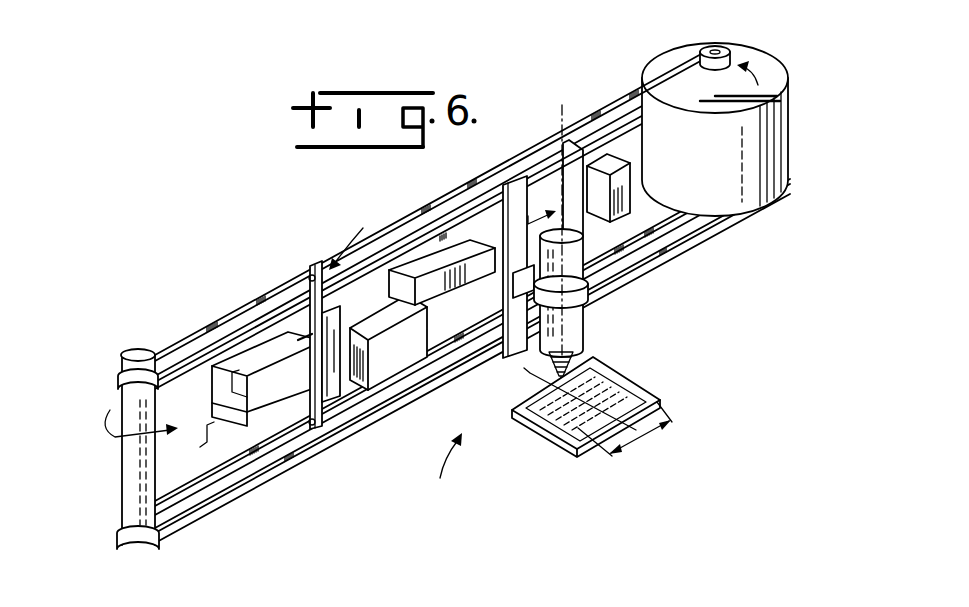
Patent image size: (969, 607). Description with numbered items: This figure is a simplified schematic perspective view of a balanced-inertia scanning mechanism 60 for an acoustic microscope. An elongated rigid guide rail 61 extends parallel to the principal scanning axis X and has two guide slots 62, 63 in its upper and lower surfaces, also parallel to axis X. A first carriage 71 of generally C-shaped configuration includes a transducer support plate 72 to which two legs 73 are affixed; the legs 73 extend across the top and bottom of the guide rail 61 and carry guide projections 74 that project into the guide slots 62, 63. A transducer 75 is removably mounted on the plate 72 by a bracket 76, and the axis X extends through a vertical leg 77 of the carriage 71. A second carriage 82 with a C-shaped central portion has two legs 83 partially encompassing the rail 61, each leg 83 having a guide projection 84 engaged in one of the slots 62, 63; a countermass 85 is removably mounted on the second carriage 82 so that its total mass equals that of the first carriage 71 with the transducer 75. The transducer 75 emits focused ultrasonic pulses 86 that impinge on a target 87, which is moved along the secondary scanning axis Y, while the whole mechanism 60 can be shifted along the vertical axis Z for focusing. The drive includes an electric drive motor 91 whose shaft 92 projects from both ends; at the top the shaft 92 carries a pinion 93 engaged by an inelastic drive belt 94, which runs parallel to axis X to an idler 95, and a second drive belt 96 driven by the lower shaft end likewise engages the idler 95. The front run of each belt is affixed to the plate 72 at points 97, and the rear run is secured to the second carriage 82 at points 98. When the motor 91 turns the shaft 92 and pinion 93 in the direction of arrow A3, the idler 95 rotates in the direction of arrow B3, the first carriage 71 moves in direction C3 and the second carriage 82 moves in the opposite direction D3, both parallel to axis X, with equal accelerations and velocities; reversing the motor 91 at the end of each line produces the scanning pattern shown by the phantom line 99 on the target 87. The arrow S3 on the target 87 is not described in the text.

The balanced-inertia scanning mechanism 60 is at (428, 469).
The guide rail 61 is at (617, 200).
The guide slot 62 is at (213, 385).
The guide slot 63 is at (235, 422).
The first carriage 71 is at (543, 148).
The transducer support plate 72 is at (533, 173).
The carriage legs 73 is at (475, 230).
The guide projections 74 is at (445, 235).
The transducer 75 is at (578, 330).
The bracket 76 is at (590, 297).
The vertical leg 77 is at (497, 267).
The second carriage 82 is at (313, 257).
The carriage legs 83 is at (318, 343).
The guide projection 84 is at (310, 337).
The countermass 85 is at (402, 358).
The focused ultrasonic pulses 86 is at (580, 350).
The target 87 is at (567, 440).
The electric drive motor 91 is at (788, 138).
The shaft 92 is at (722, 50).
The pinion 93 is at (709, 48).
The drive belt 94 is at (678, 67).
The idler 95 is at (130, 484).
The second drive belt 96 is at (202, 517).
The attachment points 97 is at (493, 193).
The attachment points 98 is at (310, 277).
The phantom line scanning pattern 99 is at (640, 388).
The arrow A3 is at (777, 80).
The arrow B3 is at (108, 437).
The arrow C3 is at (538, 203).
The arrow D3 is at (347, 238).
The sheet displacement S3 is at (643, 426).
The principal scanning axis X is at (197, 444).
The secondary scanning axis Y is at (533, 373).
The vertical axis Z is at (565, 118).